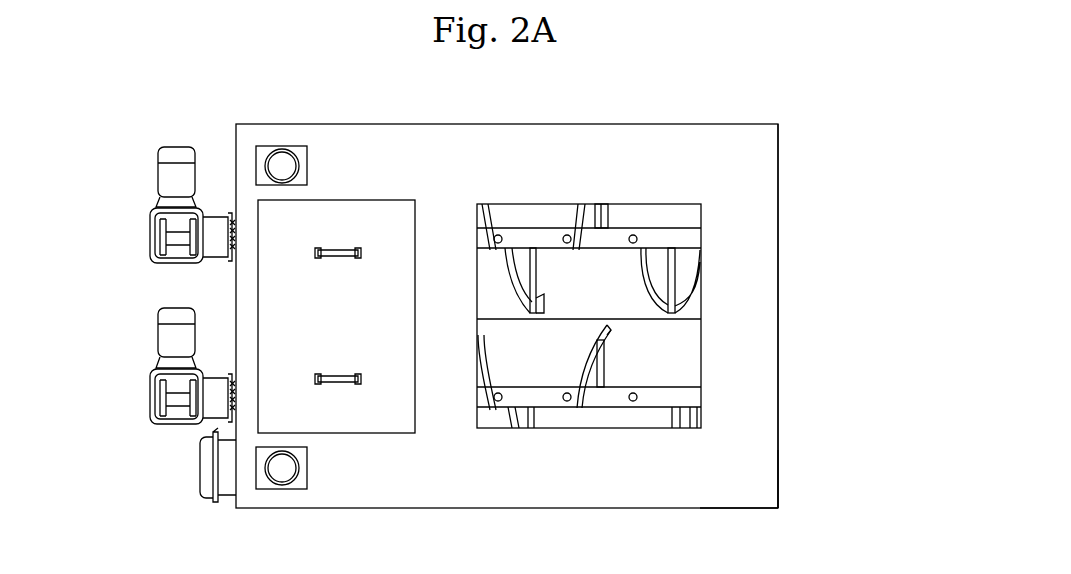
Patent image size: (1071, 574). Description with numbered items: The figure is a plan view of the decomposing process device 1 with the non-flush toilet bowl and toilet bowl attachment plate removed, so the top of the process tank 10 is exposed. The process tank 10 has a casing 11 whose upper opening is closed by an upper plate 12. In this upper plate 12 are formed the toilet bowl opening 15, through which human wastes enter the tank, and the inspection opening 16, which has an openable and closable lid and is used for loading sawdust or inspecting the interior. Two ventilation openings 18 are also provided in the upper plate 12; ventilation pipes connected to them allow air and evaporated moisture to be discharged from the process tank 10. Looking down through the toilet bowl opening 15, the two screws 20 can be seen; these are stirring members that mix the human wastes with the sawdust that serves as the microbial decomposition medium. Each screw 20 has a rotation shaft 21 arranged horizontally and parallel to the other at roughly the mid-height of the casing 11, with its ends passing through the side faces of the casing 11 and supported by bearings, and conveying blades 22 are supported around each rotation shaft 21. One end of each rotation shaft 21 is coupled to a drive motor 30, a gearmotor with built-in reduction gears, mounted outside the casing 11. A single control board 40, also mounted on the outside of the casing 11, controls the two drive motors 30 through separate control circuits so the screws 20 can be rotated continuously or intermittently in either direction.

The decomposing process device 1 is at (740, 415).
The process tank 10 is at (735, 448).
The casing 11 is at (777, 485).
The upper plate 12 is at (722, 490).
The toilet bowl opening 15 is at (665, 348).
The inspection opening 16 is at (278, 300).
The ventilation opening 18 is at (282, 162).
The screw 20 is at (607, 240).
The rotation shaft 21 is at (645, 245).
The conveying blade 22 is at (690, 285).
The drive motor 30 is at (178, 238).
The control board 40 is at (205, 475).